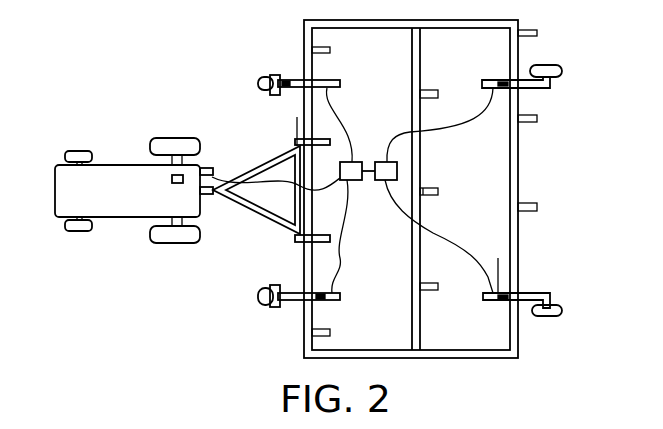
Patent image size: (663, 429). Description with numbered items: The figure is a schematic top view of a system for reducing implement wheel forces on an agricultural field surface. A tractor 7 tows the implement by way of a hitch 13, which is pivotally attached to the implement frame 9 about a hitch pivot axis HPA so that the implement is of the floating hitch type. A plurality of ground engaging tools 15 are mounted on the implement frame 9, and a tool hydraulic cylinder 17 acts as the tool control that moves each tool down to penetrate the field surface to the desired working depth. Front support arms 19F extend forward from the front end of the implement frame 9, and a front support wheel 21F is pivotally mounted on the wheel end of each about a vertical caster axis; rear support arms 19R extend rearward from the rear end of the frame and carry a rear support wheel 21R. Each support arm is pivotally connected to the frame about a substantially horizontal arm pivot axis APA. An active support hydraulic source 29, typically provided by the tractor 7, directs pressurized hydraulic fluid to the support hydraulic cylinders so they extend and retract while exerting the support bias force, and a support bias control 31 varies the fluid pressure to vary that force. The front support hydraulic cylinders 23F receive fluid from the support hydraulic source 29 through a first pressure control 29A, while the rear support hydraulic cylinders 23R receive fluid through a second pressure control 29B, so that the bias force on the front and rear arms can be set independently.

The tractor 7 is at (117, 165).
The support bias control 31 is at (172, 180).
The hitch 13 is at (257, 213).
The hitch pivot axis HPA is at (294, 124).
The support hydraulic source 29 is at (208, 168).
The implement frame 9 is at (505, 358).
The ground engaging tools 15 is at (433, 188).
The tool hydraulic cylinder 17 is at (423, 195).
The front support arms 19F is at (300, 80).
The front support wheel 21F is at (267, 77).
The front support hydraulic cylinders 23F is at (333, 82).
The first pressure control 29A is at (358, 180).
The second pressure control 29B is at (380, 162).
The rear support hydraulic cylinders 23R is at (490, 80).
The rear support arms 19R is at (535, 88).
The rear support wheel 21R is at (553, 65).
The arm pivot axis APA is at (500, 275).